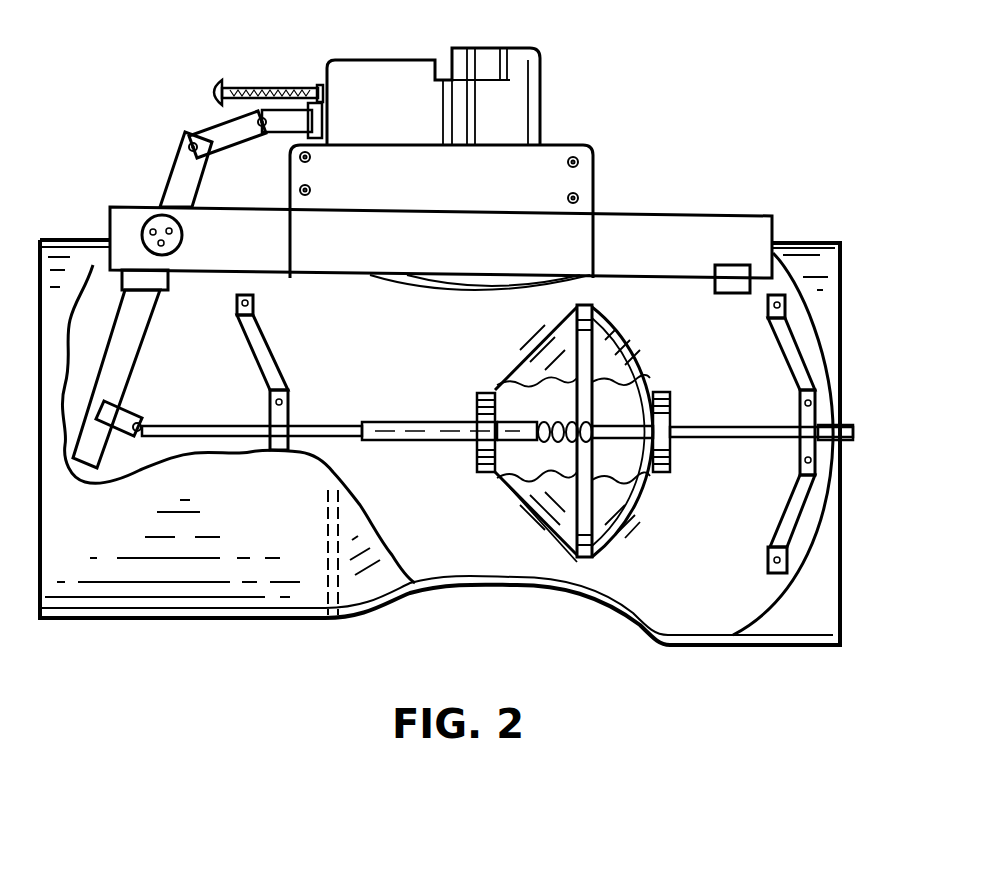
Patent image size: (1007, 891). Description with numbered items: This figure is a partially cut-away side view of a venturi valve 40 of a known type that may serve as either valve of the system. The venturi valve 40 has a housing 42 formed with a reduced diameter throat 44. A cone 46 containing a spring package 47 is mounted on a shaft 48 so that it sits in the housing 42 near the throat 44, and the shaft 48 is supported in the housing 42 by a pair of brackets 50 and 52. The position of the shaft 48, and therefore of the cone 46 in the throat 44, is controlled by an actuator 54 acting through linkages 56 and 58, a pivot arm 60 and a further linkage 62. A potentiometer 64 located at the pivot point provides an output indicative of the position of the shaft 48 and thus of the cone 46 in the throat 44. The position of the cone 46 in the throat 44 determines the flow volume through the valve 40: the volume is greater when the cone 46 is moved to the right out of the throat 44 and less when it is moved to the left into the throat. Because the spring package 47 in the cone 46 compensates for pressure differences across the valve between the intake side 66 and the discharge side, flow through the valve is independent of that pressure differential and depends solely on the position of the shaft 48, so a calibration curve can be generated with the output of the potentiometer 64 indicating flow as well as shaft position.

The venturi valve 40 is at (695, 135).
The housing 42 is at (178, 595).
The throat 44 is at (475, 590).
The cone 46 is at (643, 498).
The spring package 47 is at (550, 415).
The shaft 48 is at (332, 424).
The bracket 50 is at (265, 368).
The bracket 52 is at (793, 508).
The actuator 54 is at (378, 83).
The linkage 56 is at (277, 122).
The linkage 58 is at (220, 135).
The pivot arm 60 is at (137, 335).
The linkage 62 is at (130, 413).
The potentiometer 64 is at (157, 223).
The intake side 66 is at (840, 378).